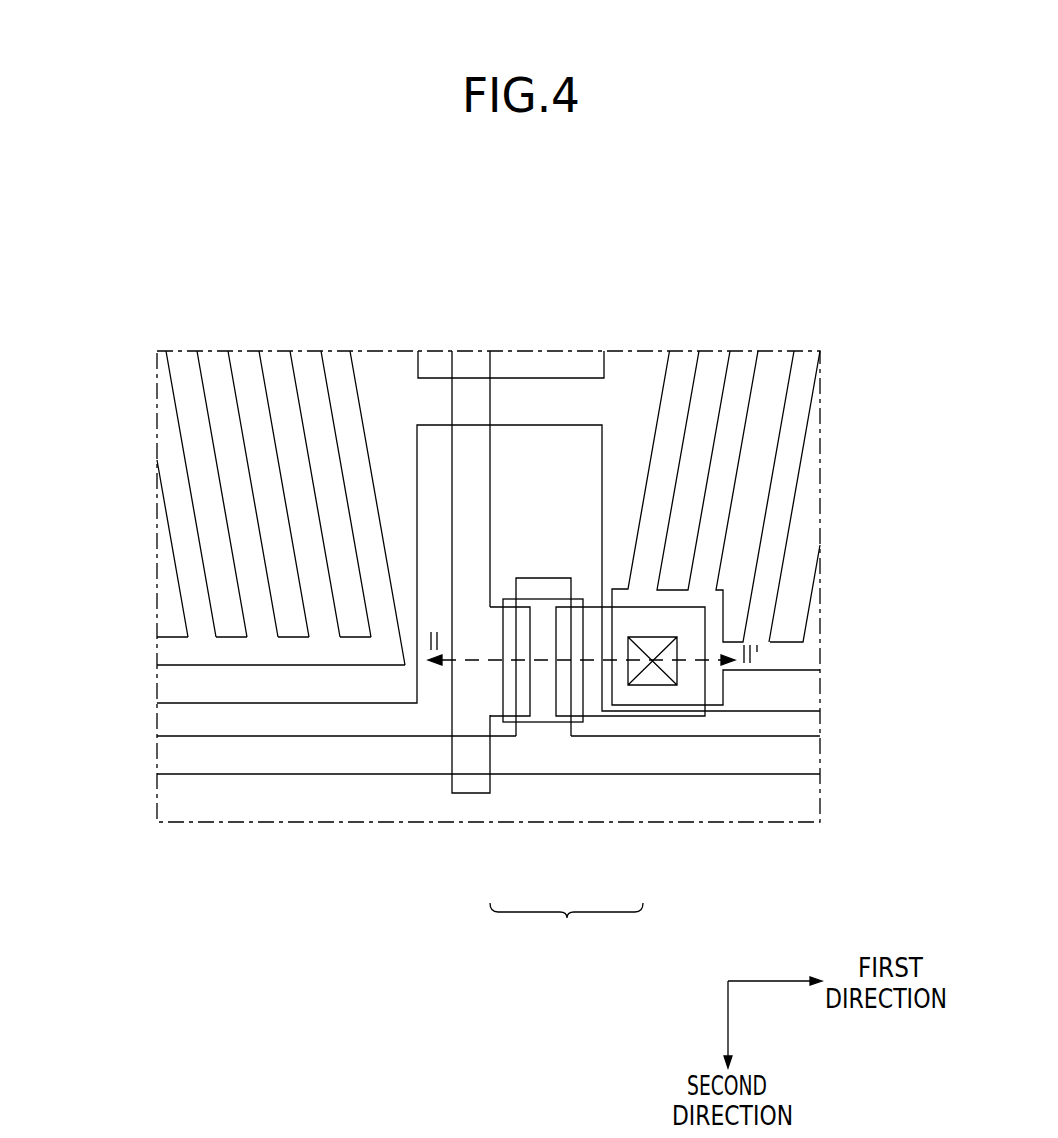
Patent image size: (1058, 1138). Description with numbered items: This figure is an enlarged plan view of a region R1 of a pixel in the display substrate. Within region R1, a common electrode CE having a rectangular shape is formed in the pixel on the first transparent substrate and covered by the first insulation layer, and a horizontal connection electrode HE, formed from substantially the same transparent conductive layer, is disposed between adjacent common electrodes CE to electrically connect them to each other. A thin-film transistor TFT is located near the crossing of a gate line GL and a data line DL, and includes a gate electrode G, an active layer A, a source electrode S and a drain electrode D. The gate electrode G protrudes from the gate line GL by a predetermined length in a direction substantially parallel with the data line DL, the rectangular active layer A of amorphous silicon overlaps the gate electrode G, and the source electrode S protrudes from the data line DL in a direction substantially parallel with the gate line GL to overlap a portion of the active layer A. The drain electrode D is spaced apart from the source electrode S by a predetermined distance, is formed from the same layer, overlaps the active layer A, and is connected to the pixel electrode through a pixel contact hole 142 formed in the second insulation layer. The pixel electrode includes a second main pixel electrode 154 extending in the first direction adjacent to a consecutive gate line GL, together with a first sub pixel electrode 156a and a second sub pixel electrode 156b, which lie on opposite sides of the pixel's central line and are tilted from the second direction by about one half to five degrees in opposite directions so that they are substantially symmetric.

The region R1 is at (821, 351).
The gate line GL is at (311, 758).
The data line DL is at (473, 501).
The horizontal connection electrode HE is at (432, 398).
The common electrode CE is at (383, 358).
The second main pixel electrode 154 is at (167, 652).
The first sub pixel electrode 156a is at (238, 508).
The second sub pixel electrode 156b is at (780, 509).
The pixel contact hole 142 is at (653, 686).
The gate electrode G is at (556, 730).
The active layer A is at (538, 707).
The source electrode S is at (497, 708).
The drain electrode D is at (593, 703).
The thin-film transistor TFT is at (566, 927).